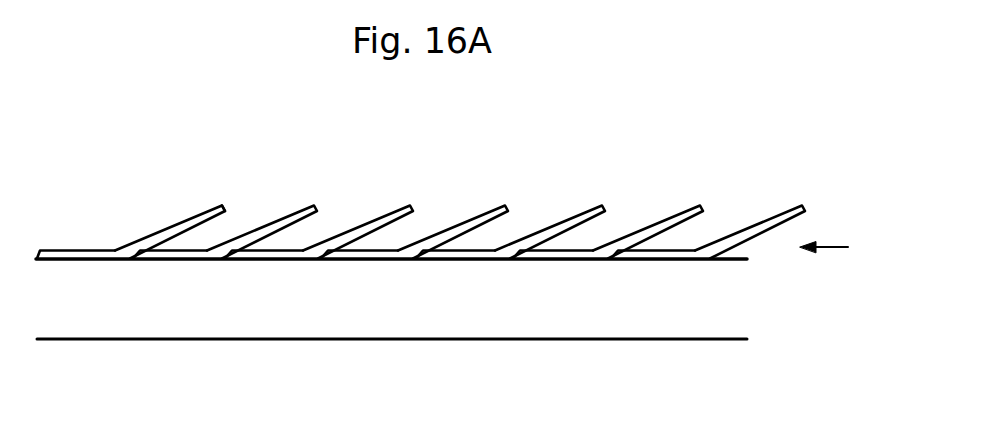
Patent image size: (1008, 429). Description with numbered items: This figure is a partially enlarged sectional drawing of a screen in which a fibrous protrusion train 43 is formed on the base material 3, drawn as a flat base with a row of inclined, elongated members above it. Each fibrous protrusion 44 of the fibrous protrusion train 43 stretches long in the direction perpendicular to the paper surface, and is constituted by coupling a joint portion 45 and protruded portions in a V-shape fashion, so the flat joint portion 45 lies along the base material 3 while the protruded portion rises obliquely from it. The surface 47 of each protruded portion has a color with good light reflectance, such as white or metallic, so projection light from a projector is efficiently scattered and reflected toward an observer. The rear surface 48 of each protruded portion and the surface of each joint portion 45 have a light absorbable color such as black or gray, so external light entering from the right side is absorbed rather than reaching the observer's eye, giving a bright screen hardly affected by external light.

The base material 3 is at (630, 303).
The fibrous protrusion train 43 is at (846, 249).
The fibrous protrusion 44 is at (420, 186).
The joint portion 45 is at (79, 251).
The surface 47 is at (178, 222).
The rear surface 48 is at (263, 200).